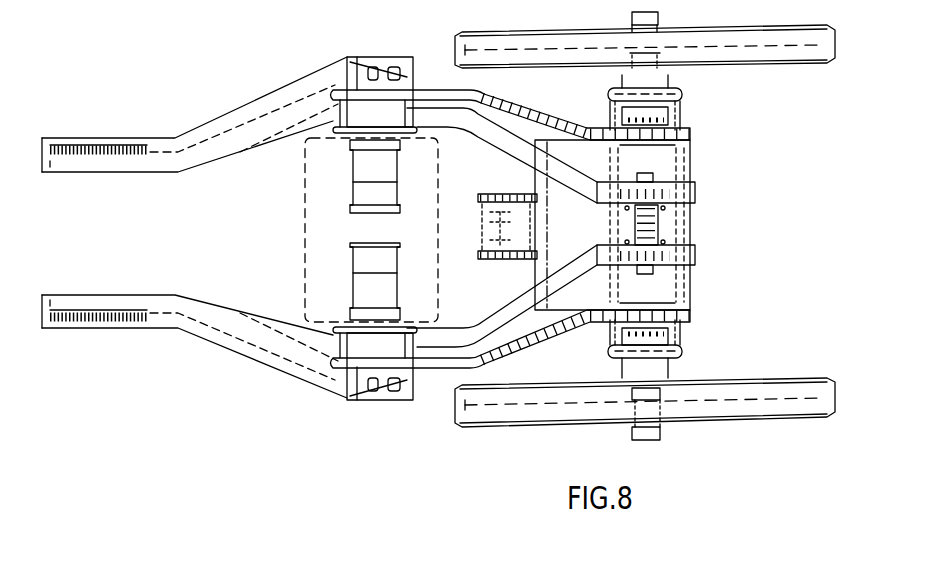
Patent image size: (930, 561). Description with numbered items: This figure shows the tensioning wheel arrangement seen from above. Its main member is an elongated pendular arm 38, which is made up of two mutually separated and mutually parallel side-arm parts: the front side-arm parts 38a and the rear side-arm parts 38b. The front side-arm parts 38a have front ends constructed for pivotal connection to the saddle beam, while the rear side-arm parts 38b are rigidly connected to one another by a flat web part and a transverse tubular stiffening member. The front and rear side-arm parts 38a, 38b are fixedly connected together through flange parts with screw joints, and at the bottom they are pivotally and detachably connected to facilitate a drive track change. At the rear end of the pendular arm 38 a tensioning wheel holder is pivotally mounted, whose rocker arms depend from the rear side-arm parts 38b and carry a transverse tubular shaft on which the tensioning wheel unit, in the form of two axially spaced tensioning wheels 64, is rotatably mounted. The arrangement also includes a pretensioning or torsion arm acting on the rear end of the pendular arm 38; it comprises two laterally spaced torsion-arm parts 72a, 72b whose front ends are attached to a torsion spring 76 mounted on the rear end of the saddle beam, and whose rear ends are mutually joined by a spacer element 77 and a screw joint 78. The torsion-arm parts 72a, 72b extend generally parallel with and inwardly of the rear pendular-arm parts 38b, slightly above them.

The pendular arm 38 is at (263, 92).
The front side-arm part 38a is at (234, 140).
The rear side-arm part 38b is at (517, 107).
The tensioning wheel 64 is at (780, 52).
The torsion-arm part 72a is at (490, 318).
The torsion-arm part 72b is at (490, 133).
The torsion spring 76 is at (325, 233).
The spacer element 77 is at (658, 229).
The screw joint 78 is at (652, 178).